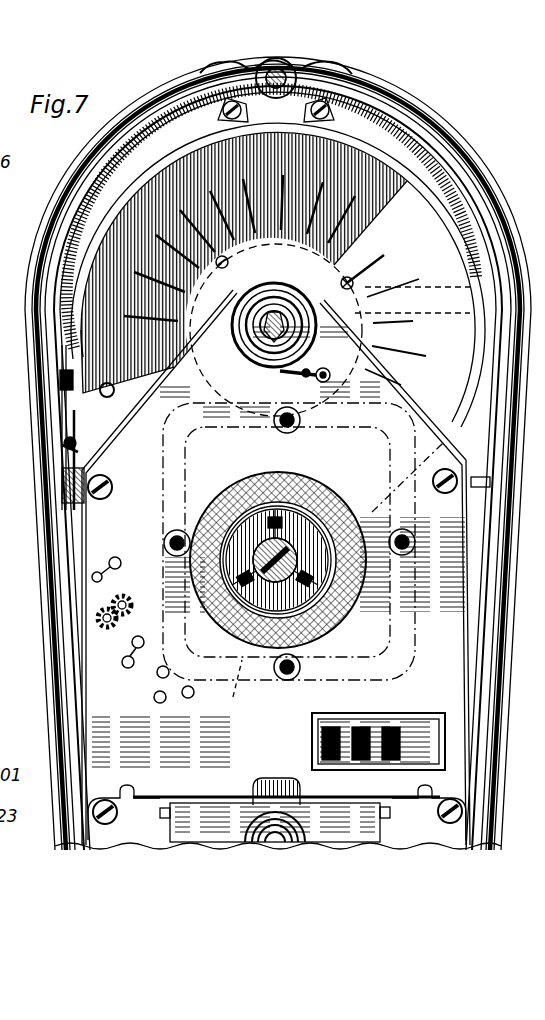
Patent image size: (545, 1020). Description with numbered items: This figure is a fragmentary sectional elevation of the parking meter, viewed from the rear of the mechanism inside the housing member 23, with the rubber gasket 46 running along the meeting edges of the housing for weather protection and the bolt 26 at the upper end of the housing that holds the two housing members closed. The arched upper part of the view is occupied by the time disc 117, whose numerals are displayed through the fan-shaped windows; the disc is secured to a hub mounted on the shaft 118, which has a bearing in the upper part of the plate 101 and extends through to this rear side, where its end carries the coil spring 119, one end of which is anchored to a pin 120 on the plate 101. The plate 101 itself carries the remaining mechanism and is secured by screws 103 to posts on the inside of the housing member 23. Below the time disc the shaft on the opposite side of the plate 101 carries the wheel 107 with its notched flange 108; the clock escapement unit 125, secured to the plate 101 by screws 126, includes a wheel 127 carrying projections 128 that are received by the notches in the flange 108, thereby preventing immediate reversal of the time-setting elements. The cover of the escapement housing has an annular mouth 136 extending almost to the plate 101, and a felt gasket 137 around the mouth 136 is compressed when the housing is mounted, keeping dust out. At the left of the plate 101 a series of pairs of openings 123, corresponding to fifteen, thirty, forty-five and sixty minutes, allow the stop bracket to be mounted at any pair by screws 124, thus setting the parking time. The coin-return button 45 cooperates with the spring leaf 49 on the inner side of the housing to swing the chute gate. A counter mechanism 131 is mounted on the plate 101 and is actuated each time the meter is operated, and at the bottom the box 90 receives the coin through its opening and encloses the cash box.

The bolt 26 is at (296, 79).
The time disc 117 is at (147, 186).
The rubber gasket 46 is at (485, 203).
The button 45 is at (60, 383).
The spring leaf 49 is at (60, 410).
The housing member 23 is at (45, 452).
The plate 101 is at (135, 418).
The shaft 118 is at (248, 302).
The coil spring 119 is at (291, 288).
The pin 120 is at (313, 372).
The screws 126 is at (284, 408).
The felt gasket 137 is at (250, 478).
The wheel 107 is at (328, 506).
The projections 128 is at (292, 489).
The notched flange 108 is at (325, 623).
The annular mouth 136 is at (333, 489).
The wheel 127 is at (236, 636).
The screws 103 is at (112, 496).
The openings 123 is at (113, 558).
The screws 124 is at (116, 600).
The clock escapement unit 125 is at (224, 688).
The counter mechanism 131 is at (312, 724).
The box 90 is at (193, 810).